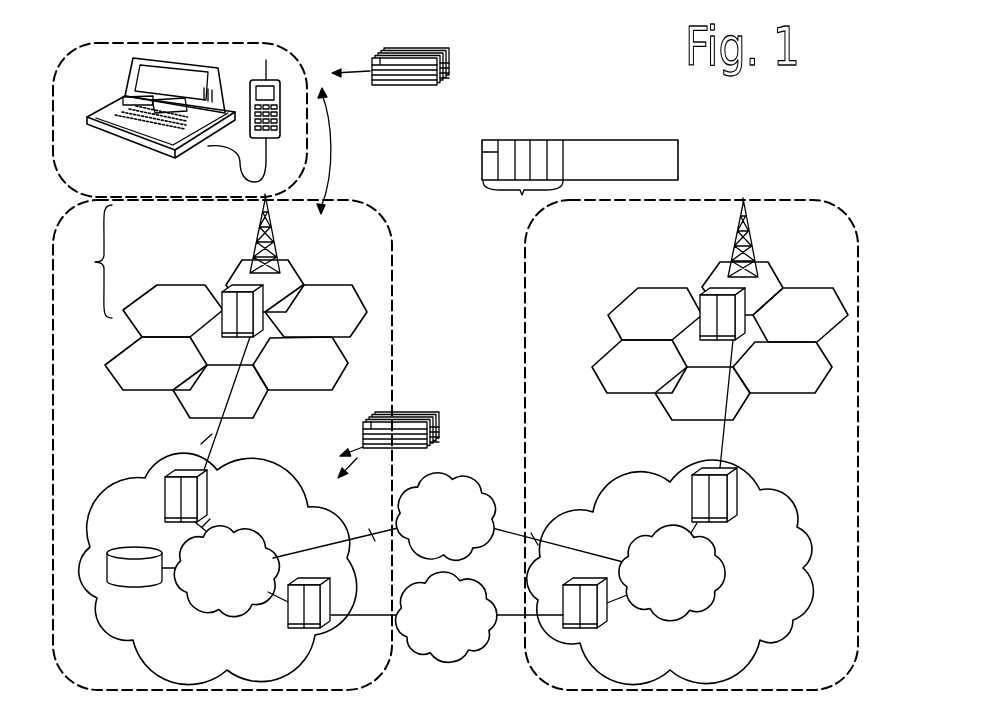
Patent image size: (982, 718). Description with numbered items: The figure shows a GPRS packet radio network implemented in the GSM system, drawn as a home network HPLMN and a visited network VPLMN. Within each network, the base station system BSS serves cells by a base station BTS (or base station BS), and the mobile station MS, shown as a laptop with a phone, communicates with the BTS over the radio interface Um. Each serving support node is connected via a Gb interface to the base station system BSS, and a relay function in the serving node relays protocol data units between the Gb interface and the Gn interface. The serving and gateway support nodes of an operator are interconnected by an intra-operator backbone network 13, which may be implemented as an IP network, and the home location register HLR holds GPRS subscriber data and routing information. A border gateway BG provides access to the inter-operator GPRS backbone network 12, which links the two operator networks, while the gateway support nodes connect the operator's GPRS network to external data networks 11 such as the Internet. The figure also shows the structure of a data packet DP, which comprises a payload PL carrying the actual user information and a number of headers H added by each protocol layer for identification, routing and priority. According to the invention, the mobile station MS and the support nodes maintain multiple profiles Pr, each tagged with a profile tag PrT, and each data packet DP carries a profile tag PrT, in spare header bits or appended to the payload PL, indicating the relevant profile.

The mobile station MS is at (287, 52).
The Um interface Um is at (348, 141).
The profiles Pr is at (447, 63).
The data packet DP is at (531, 285).
The profile tag PrT is at (482, 148).
The payload PL is at (617, 162).
The headers H is at (523, 195).
The home public land mobile network HPLMN is at (132, 441).
The visited public land mobile network VPLMN is at (850, 446).
The base station system BSS is at (211, 311).
The base station BTS is at (253, 250).
The base station BS is at (730, 253).
The Gb interface Gb is at (212, 403).
The Gn interface Gn is at (214, 520).
The home location register HLR is at (143, 567).
The intra-operator backbone network 13 is at (185, 593).
The border gateway BG is at (450, 533).
The inter-operator GPRS backbone network 12 is at (467, 477).
The data networks 11 is at (468, 580).